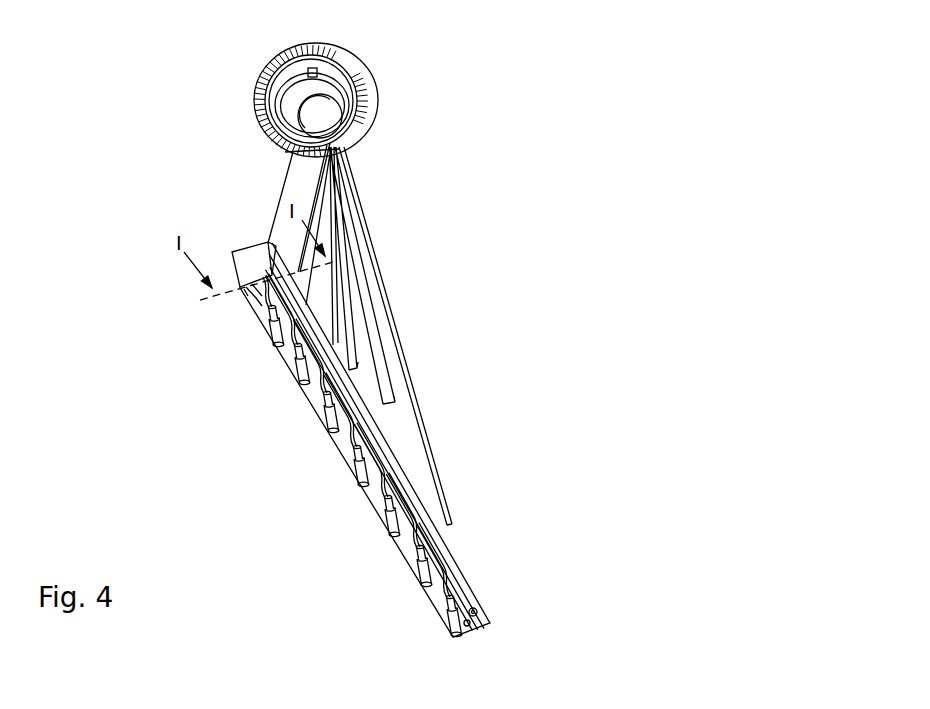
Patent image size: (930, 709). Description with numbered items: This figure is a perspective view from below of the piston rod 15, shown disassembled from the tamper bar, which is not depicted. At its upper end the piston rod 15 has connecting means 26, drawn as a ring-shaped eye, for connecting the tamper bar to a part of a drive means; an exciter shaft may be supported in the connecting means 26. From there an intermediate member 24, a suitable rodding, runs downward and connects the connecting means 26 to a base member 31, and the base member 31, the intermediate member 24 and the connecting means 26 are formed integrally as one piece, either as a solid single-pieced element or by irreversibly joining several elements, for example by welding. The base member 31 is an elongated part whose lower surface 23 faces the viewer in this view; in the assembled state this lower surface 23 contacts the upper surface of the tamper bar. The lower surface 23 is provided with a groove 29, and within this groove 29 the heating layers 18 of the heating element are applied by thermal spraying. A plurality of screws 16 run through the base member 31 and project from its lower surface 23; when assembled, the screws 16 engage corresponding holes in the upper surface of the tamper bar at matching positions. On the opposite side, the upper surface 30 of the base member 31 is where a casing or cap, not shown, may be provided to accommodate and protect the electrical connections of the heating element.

The piston rod 15 is at (388, 243).
The screws 16 is at (300, 378).
The heating layers 18 is at (345, 445).
The lower surface 23 is at (365, 495).
The intermediate member 24 is at (372, 302).
The connecting means 26 is at (372, 128).
The groove 29 is at (260, 302).
The upper surface 30 is at (246, 251).
The base member 31 is at (468, 582).